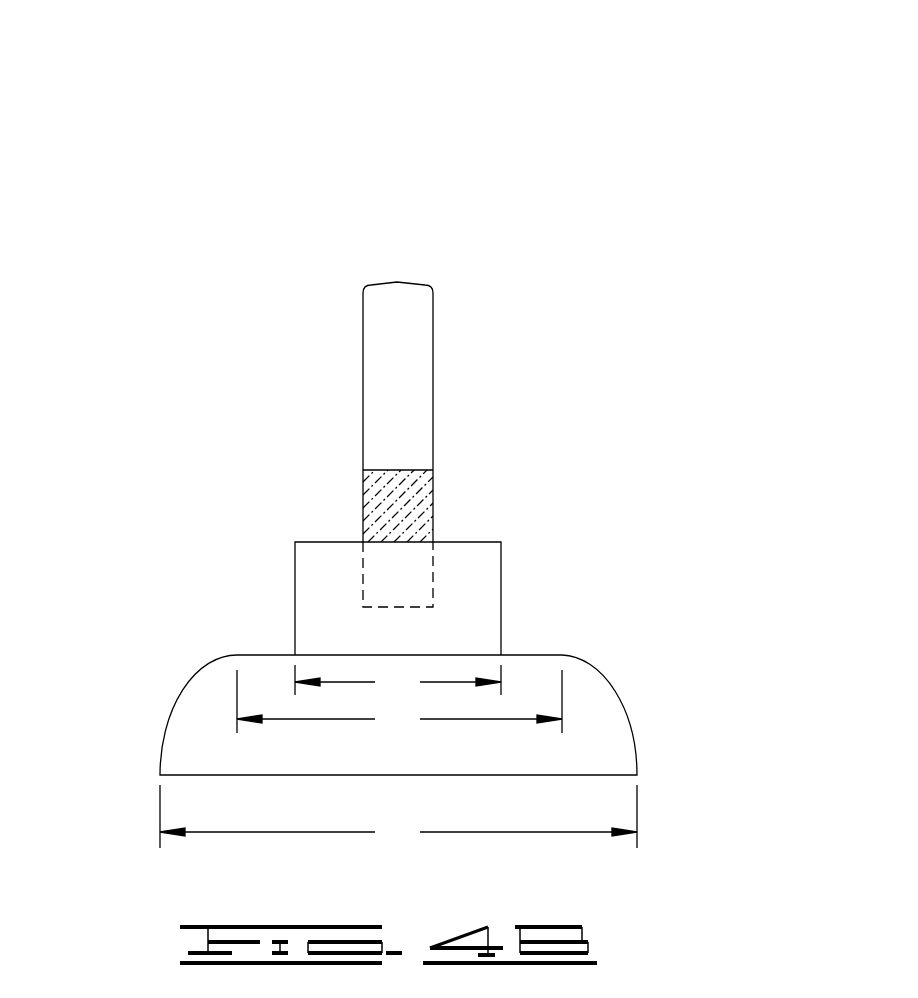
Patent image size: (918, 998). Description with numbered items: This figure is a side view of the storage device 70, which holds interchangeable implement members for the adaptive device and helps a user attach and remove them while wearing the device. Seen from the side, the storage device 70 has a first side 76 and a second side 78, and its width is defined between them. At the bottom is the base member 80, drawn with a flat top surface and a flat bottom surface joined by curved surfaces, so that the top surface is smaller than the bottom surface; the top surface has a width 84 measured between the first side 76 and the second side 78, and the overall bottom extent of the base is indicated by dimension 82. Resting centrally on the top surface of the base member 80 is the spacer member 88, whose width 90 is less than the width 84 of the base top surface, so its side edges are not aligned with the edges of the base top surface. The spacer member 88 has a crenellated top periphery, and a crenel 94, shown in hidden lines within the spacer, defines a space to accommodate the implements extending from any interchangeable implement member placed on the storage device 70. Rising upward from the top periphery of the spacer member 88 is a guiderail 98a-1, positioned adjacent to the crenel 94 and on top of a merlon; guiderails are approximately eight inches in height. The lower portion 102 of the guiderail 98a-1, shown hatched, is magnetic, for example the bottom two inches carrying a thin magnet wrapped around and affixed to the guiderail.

The storage device 70 is at (638, 120).
The first side 76 is at (287, 357).
The second side 78 is at (495, 363).
The base member 80 is at (178, 707).
The base width 82 is at (398, 819).
The width of the top surface of the base member 84 is at (399, 703).
The spacer member 88 is at (502, 592).
The width of the spacer member 90 is at (398, 682).
The crenel 94 is at (363, 578).
The guiderail 98a-1 is at (398, 282).
The lower portion of the guiderail 102 is at (425, 500).